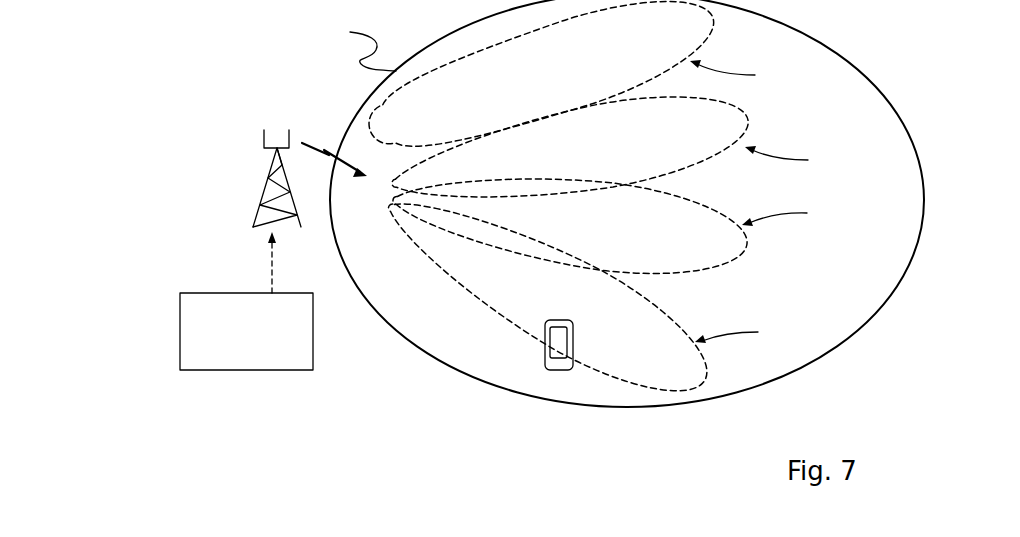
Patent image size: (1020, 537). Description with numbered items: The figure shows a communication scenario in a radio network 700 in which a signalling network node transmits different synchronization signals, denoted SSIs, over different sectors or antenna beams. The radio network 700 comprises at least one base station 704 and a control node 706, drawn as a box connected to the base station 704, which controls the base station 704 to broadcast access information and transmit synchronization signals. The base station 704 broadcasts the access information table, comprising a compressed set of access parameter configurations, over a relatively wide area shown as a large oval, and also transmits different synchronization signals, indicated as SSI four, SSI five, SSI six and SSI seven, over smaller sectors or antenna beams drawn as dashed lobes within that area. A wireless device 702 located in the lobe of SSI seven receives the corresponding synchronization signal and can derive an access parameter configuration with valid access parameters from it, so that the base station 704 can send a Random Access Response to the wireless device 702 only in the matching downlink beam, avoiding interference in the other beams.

The radio network 700 is at (131, 125).
The wireless device 702 is at (573, 337).
The base station 704 is at (260, 200).
The control node 706 is at (180, 335).